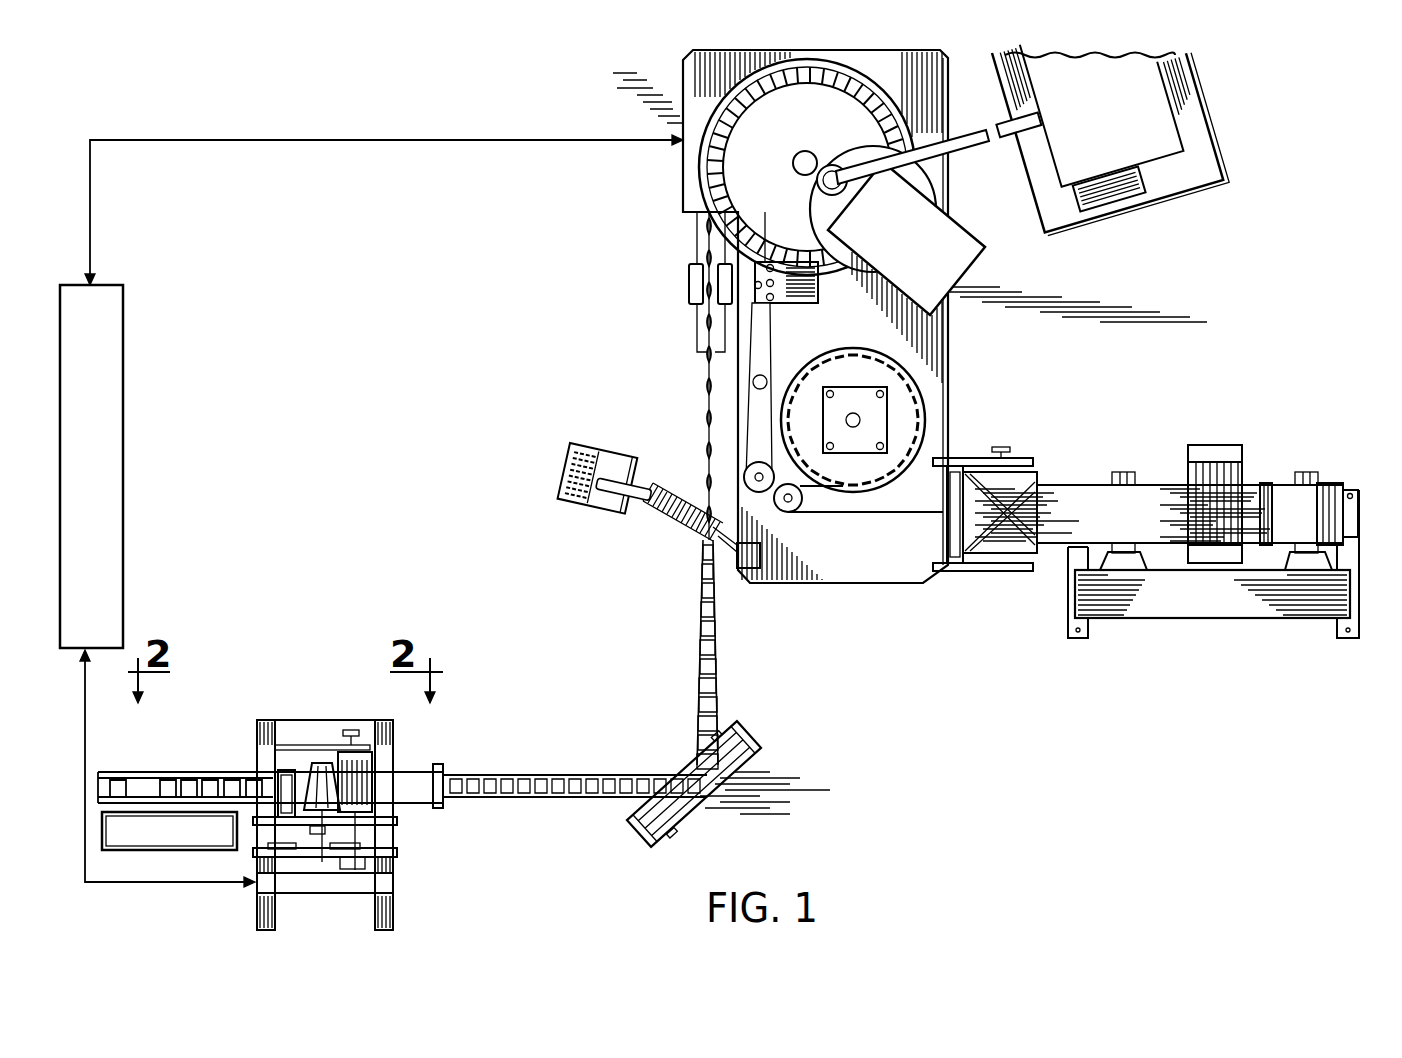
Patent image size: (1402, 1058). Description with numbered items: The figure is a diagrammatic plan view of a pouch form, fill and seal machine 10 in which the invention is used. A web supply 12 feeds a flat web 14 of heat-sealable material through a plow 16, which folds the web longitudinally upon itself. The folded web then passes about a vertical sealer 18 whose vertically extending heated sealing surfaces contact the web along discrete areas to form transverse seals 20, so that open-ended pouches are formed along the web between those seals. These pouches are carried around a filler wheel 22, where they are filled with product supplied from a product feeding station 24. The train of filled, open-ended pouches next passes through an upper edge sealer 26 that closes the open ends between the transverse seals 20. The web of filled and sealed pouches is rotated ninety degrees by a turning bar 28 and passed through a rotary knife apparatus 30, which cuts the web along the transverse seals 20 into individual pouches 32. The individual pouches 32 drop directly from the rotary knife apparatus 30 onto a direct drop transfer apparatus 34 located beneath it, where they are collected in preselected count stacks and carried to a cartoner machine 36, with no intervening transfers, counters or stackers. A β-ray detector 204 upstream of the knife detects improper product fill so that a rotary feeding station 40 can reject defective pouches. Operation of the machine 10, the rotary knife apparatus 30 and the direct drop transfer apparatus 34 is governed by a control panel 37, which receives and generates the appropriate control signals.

The pouch form, fill and seal machine 10 is at (1330, 151).
The web supply 12 is at (1325, 492).
The flat web 14 is at (1152, 500).
The plow 16 is at (1018, 456).
The vertical sealer 18 is at (908, 411).
The transverse seals 20 is at (709, 425).
The filler wheel 22 is at (877, 86).
The product feeding station 24 is at (1122, 119).
The upper edge sealer 26 is at (690, 277).
The turning bar 28 is at (755, 740).
The rotary knife apparatus 30 is at (340, 712).
The individual pouches 32 is at (236, 778).
The direct drop transfer apparatus 34 is at (166, 772).
The cartoner machine 36 is at (140, 855).
The control panel 37 is at (124, 436).
The rotary feeding station 40 is at (325, 768).
The β-ray detector 204 is at (442, 765).